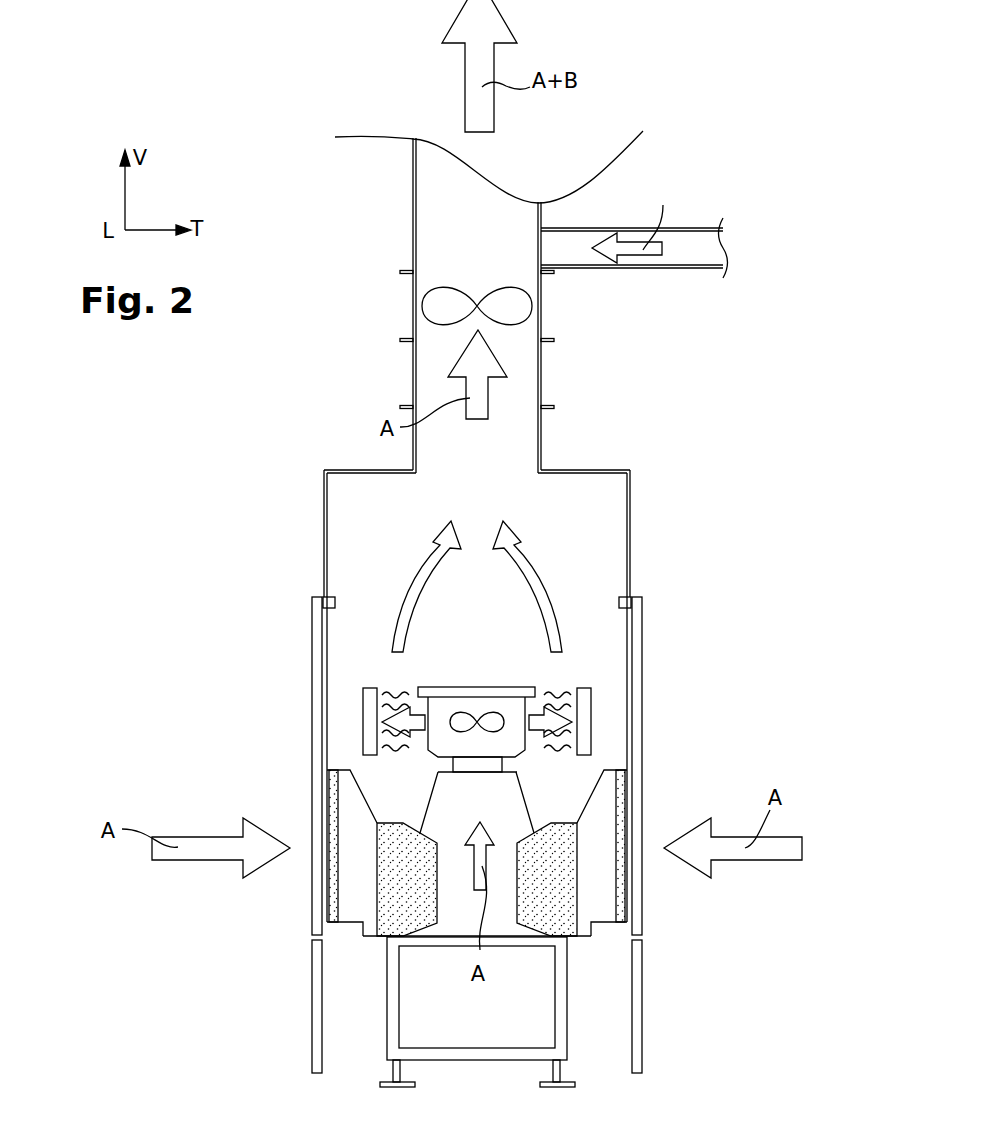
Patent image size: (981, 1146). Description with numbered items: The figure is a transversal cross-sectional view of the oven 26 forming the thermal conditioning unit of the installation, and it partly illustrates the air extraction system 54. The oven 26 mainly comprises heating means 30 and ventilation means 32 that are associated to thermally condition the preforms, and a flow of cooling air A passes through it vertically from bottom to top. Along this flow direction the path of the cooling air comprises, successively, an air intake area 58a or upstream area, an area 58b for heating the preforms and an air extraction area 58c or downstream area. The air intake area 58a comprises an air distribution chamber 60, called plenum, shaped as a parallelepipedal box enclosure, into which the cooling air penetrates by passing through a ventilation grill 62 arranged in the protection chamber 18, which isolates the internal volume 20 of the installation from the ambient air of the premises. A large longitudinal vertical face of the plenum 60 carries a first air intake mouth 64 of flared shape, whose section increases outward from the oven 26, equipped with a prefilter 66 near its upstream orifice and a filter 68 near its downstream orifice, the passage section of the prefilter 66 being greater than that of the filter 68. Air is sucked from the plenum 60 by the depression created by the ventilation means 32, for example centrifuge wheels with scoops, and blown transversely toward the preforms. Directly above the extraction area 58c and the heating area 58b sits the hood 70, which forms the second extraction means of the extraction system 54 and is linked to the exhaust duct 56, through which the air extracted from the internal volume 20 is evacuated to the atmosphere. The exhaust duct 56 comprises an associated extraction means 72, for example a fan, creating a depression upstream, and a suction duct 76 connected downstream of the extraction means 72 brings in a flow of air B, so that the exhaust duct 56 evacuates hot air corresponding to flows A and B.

The protection chamber 18 is at (318, 633).
The internal volume 20 is at (362, 530).
The oven 26 is at (284, 166).
The heating means 30 is at (372, 690).
The ventilation means 32 is at (468, 676).
The air extraction system 54 is at (352, 343).
The exhaust duct 56 is at (541, 360).
The air intake area 58a is at (188, 930).
The heating area 58b is at (612, 732).
The air extraction area 58c is at (498, 467).
The air distribution chamber 60 is at (588, 970).
The ventilation grill 62 is at (313, 872).
The first air intake mouth 64 is at (337, 943).
The prefilter 66 is at (333, 907).
The filter 68 is at (417, 903).
The hood 70 is at (632, 508).
The extraction means 72 is at (438, 268).
The suction duct 76 is at (705, 272).